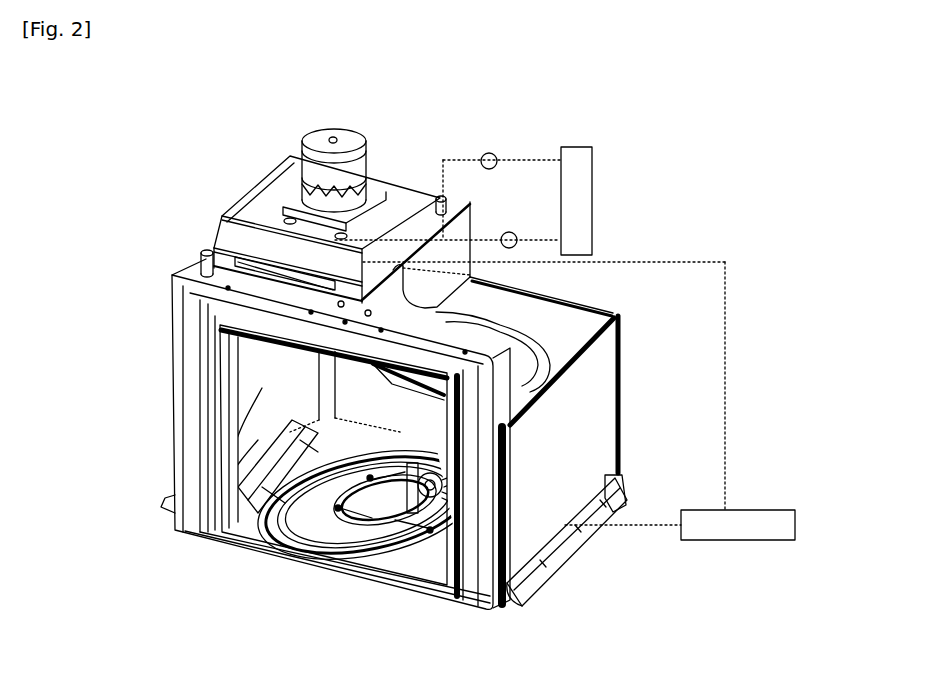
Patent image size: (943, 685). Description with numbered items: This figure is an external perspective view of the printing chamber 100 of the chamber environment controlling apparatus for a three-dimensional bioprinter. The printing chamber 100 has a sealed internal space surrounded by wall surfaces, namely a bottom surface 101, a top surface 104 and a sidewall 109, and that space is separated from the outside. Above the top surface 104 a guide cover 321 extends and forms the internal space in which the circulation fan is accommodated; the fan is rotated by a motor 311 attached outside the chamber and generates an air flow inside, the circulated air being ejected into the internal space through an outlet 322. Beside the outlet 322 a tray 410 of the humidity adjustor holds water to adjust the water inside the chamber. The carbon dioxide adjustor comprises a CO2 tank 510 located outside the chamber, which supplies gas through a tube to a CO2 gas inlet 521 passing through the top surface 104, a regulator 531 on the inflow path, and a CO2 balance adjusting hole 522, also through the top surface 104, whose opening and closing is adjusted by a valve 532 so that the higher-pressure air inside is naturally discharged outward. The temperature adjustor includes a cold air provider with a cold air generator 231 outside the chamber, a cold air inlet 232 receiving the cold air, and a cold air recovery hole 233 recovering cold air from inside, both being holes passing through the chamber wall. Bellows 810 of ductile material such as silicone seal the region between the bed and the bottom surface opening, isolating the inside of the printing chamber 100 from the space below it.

The printing chamber 100 is at (158, 388).
The bottom surface 101 is at (290, 553).
The top surface 104 is at (545, 327).
The sidewall 109 is at (262, 388).
The cold air generator 231 is at (775, 510).
The cold air inlet 232 is at (563, 527).
The cold air recovery hole 233 is at (430, 306).
The motor 311 is at (302, 148).
The guide cover 321 is at (263, 213).
The outlet 322 is at (312, 566).
The tray 410 is at (298, 495).
The CO2 tank 510 is at (593, 170).
The CO2 gas inlet 521 is at (205, 256).
The CO2 balance adjusting hole 522 is at (438, 200).
The regulator 531 is at (510, 232).
The valve 532 is at (495, 153).
The bellows 810 is at (352, 577).